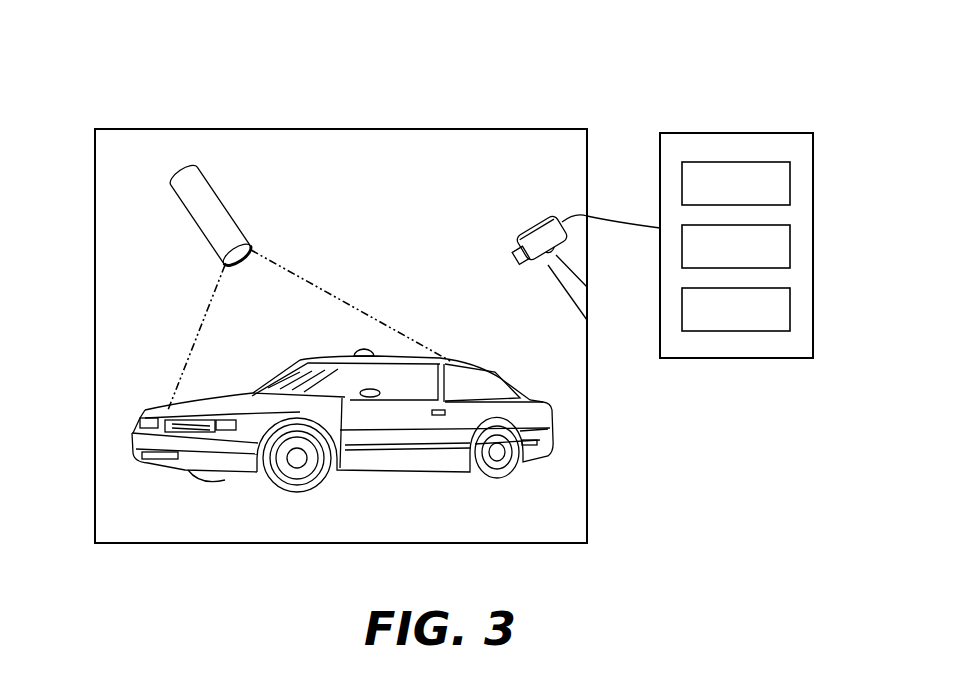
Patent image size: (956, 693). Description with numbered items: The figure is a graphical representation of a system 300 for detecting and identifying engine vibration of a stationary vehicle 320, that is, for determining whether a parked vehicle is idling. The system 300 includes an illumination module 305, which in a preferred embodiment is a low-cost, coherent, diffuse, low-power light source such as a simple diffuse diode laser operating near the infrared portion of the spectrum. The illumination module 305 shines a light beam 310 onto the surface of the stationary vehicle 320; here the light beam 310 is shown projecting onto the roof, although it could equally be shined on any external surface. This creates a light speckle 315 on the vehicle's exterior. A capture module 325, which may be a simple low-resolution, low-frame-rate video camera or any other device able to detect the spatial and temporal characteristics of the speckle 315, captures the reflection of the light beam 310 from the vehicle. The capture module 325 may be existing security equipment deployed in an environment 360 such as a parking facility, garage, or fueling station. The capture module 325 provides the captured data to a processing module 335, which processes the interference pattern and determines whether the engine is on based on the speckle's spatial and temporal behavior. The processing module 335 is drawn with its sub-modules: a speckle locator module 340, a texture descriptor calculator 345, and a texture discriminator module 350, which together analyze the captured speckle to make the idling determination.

The system 300 is at (384, 82).
The illumination module 305 is at (230, 207).
The light beam 310 is at (193, 330).
The light speckle 315 is at (366, 349).
The stationary vehicle 320 is at (302, 497).
The capture module 325 is at (530, 220).
The processing module 335 is at (736, 133).
The speckle locator module 340 is at (736, 183).
The texture descriptor calculator 345 is at (736, 246).
The texture discriminator module 350 is at (736, 309).
The environment 360 is at (140, 389).